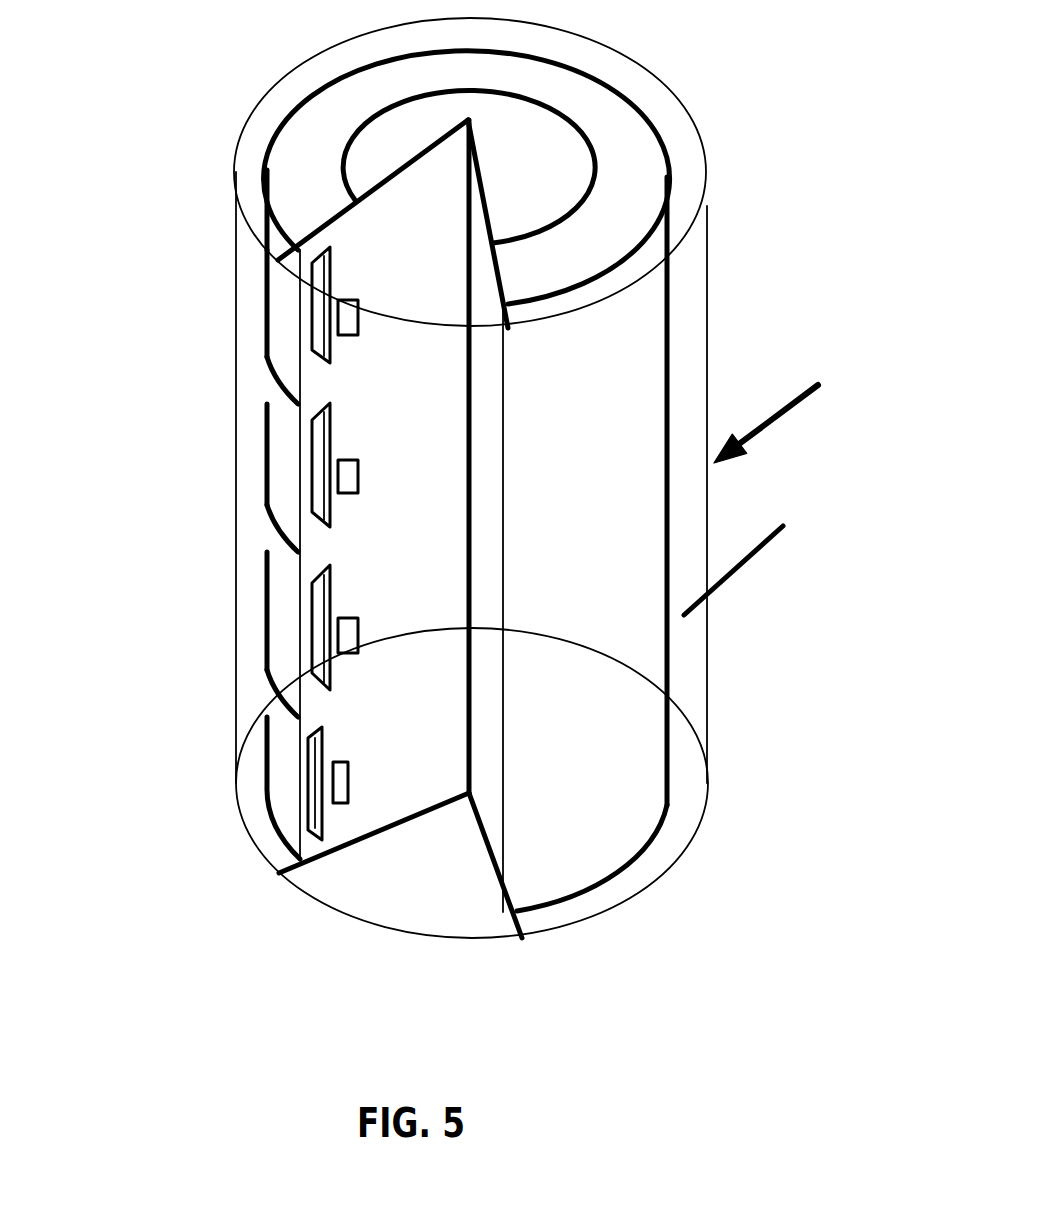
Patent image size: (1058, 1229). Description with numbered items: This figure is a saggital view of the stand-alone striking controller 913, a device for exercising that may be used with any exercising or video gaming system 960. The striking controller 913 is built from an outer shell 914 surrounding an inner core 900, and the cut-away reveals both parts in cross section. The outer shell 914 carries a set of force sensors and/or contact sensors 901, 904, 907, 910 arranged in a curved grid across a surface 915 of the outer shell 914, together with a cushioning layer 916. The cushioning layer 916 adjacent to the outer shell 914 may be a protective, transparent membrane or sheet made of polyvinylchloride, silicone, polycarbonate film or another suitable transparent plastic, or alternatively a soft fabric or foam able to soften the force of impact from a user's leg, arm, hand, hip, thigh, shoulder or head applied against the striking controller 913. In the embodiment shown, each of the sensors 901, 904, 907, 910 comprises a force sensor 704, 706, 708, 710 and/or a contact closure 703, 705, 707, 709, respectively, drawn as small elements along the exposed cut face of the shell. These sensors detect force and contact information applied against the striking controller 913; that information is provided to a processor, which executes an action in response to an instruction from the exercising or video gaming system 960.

The inner core 900 is at (583, 181).
The force sensor and/or contact sensor 901 is at (285, 308).
The force sensor and/or contact sensor 904 is at (285, 450).
The force sensor and/or contact sensor 907 is at (285, 605).
The force sensor and/or contact sensor 910 is at (285, 750).
The contact closure 703 is at (330, 363).
The force sensor 704 is at (358, 328).
The contact closure 705 is at (330, 517).
The force sensor 706 is at (358, 478).
The contact closure 707 is at (333, 658).
The force sensor 708 is at (358, 637).
The contact closure 709 is at (322, 750).
The force sensor 710 is at (348, 782).
The striking controller 913 is at (714, 641).
The outer shell 914 is at (615, 125).
The surface of the outer shell 915 is at (686, 338).
The cushioning layer 916 is at (766, 555).
The exercising or video gaming system 960 is at (804, 409).